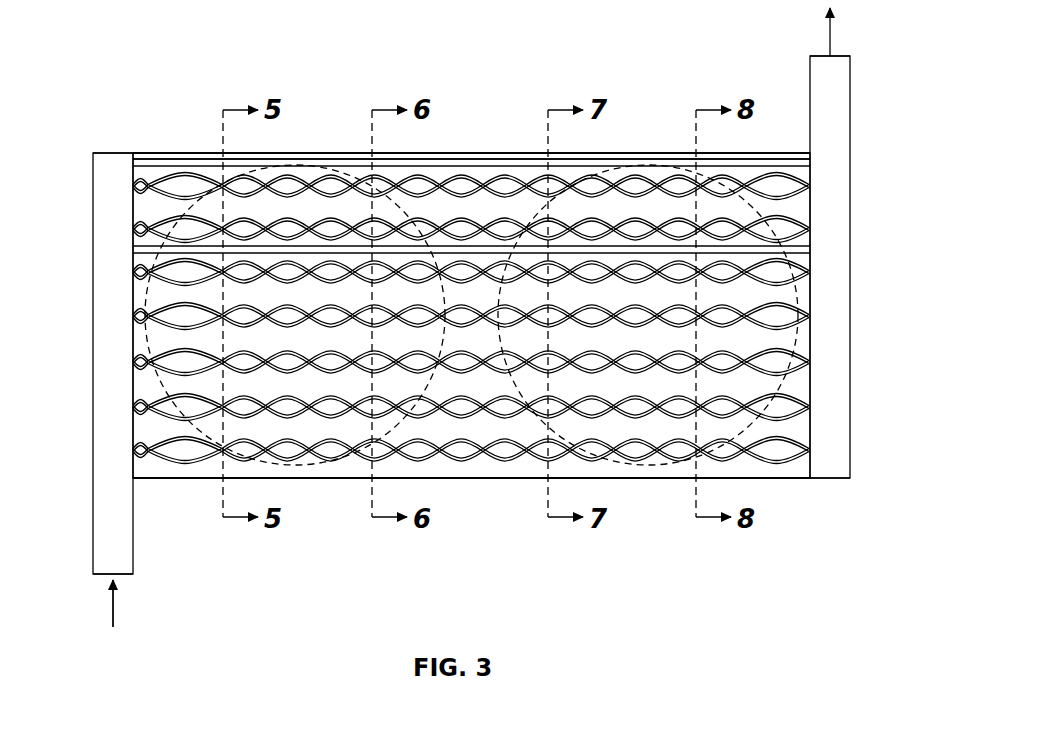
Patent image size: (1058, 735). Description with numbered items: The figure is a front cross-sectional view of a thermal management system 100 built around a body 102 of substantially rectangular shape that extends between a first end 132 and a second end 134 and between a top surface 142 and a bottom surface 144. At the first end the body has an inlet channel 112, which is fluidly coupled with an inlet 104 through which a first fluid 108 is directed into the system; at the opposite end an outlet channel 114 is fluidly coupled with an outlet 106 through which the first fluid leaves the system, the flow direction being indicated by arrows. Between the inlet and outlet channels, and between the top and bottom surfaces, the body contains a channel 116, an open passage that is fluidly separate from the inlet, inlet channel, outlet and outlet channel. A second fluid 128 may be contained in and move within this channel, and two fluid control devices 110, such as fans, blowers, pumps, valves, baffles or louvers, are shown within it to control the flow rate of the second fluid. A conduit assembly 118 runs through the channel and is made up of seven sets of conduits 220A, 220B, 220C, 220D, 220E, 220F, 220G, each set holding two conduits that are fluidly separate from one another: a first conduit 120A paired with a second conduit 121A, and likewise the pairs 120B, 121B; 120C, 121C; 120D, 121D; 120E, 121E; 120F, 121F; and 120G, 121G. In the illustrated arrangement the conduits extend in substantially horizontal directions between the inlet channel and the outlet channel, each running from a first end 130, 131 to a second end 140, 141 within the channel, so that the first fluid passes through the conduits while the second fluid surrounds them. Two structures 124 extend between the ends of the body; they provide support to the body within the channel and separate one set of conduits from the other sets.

The thermal management system 100 is at (343, 56).
The body 102 is at (112, 152).
The inlet 104 is at (100, 577).
The outlet 106 is at (826, 57).
The first fluid 108 is at (832, 35).
The fluid control device 110 is at (338, 430).
The inlet channel 112 is at (92, 493).
The outlet channel 114 is at (852, 128).
The channel 116 is at (507, 468).
The conduit assembly 118 is at (460, 141).
The first conduit 120A is at (810, 176).
The second conduit 121A is at (810, 188).
The first conduit 120B is at (810, 226).
The second conduit 121B is at (810, 234).
The first conduit 120C is at (810, 268).
The second conduit 121C is at (810, 278).
The first conduit 120D is at (810, 312).
The second conduit 121D is at (810, 322).
The first conduit 120E is at (810, 358).
The second conduit 121E is at (810, 368).
The first conduit 120F is at (810, 402).
The second conduit 121F is at (810, 412).
The first conduit 120G is at (810, 444).
The second conduit 121G is at (810, 456).
The structure 124 is at (500, 161).
The second fluid 128 is at (463, 468).
The first end 130 is at (160, 143).
The first end 131 is at (143, 143).
The first end 132 is at (113, 637).
The second end 134 is at (832, 492).
The second end 140 is at (787, 143).
The second end 141 is at (800, 143).
The top surface 142 is at (322, 153).
The bottom surface 144 is at (188, 480).
The first set of conduits 220A is at (133, 198).
The second set of conduits 220B is at (133, 234).
The third set of conduits 220C is at (133, 280).
The fourth set of conduits 220D is at (133, 326).
The fifth set of conduits 220E is at (133, 372).
The sixth set of conduits 220F is at (133, 417).
The seventh set of conduits 220G is at (133, 458).